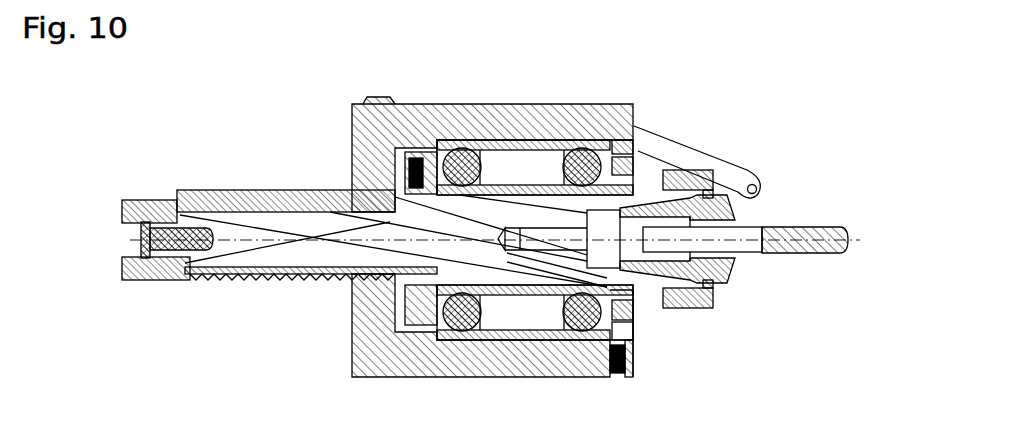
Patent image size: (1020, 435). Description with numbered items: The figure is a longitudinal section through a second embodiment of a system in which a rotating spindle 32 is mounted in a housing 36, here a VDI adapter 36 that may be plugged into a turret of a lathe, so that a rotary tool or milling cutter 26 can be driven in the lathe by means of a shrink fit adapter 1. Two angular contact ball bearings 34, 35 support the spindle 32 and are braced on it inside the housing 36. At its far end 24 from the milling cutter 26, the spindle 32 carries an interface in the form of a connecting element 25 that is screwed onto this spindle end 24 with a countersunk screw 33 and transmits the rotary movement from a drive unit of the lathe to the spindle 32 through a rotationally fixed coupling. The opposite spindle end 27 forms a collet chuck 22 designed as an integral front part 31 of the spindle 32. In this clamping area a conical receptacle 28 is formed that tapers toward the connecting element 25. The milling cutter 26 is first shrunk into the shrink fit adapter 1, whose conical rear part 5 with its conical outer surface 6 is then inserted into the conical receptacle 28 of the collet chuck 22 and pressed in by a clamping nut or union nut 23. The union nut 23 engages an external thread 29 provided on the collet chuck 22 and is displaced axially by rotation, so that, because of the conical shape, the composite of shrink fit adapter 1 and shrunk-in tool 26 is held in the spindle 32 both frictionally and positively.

The shrink fit adapter 1 is at (733, 219).
The conical rear part 5 is at (603, 137).
The conical outer surface 6 is at (645, 290).
The collet chuck 22 is at (655, 195).
The union nut 23 is at (728, 275).
The spindle end 24 is at (170, 225).
The connecting element 25 is at (126, 280).
The rotary tool 26 is at (768, 223).
The spindle end 27 is at (650, 295).
The conical receptacle 28 is at (731, 160).
The external thread 29 is at (757, 170).
The integral front part 31 is at (633, 300).
The spindle 32 is at (330, 243).
The countersunk screw 33 is at (140, 240).
The angular contact ball bearing 34 is at (468, 138).
The angular contact ball bearing 35 is at (571, 138).
The housing 36 is at (403, 104).